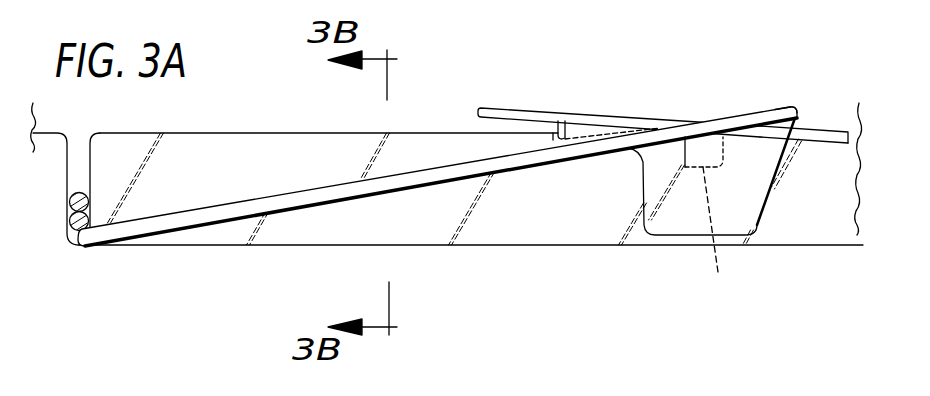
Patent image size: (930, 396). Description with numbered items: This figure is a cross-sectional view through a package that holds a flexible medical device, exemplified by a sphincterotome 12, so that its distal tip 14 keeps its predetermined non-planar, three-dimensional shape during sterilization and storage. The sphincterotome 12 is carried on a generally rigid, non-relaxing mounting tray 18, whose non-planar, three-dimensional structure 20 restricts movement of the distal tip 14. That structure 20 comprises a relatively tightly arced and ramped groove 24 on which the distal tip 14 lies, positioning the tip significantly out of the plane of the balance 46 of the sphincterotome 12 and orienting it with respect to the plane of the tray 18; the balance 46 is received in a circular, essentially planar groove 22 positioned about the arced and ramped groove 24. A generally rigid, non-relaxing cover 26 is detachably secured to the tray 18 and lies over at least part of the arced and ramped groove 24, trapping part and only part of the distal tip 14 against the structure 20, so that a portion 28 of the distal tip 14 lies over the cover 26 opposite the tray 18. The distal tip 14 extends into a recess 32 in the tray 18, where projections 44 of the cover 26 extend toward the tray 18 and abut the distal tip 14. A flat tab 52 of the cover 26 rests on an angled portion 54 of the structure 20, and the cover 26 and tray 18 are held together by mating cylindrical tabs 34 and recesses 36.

The sphincterotome 12 is at (335, 186).
The distal tip 14 is at (757, 213).
The mounting tray 18 is at (417, 240).
The non-planar, three-dimensional structure 20 is at (578, 156).
The circular groove 22 is at (92, 173).
The arced and ramped groove 24 is at (318, 247).
The cover 26 is at (480, 107).
The portion of the distal tip 28 is at (790, 106).
The recess 32 is at (663, 236).
The cylindrical tab 34 is at (715, 237).
The recess 36 is at (752, 208).
The projection 44 is at (553, 134).
The balance of the sphincterotome 46 is at (71, 204).
The flat tab 52 is at (830, 132).
The angled portion 54 is at (843, 146).